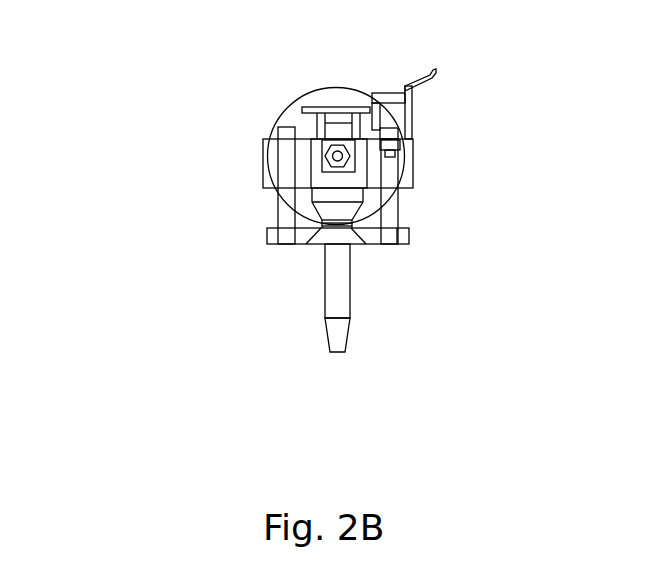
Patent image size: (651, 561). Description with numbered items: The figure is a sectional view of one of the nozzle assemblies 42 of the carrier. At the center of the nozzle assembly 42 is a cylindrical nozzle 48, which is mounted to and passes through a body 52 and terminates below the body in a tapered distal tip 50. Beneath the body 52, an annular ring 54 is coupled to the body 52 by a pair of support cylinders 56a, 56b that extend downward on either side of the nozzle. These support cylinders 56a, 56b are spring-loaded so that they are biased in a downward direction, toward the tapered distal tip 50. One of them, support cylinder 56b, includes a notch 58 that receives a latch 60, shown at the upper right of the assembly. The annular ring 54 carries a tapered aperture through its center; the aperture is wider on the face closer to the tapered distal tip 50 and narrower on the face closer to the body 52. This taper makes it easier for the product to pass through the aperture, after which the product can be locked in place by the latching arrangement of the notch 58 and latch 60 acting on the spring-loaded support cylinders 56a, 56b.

The nozzle assembly 42 is at (86, 53).
The cylindrical nozzle 48 is at (312, 193).
The tapered distal tip 50 is at (327, 338).
The body 52 is at (264, 138).
The annular ring 54 is at (297, 245).
The support cylinder 56a is at (276, 202).
The support cylinder 56b is at (398, 202).
The notch 58 is at (413, 148).
The latch 60 is at (431, 72).